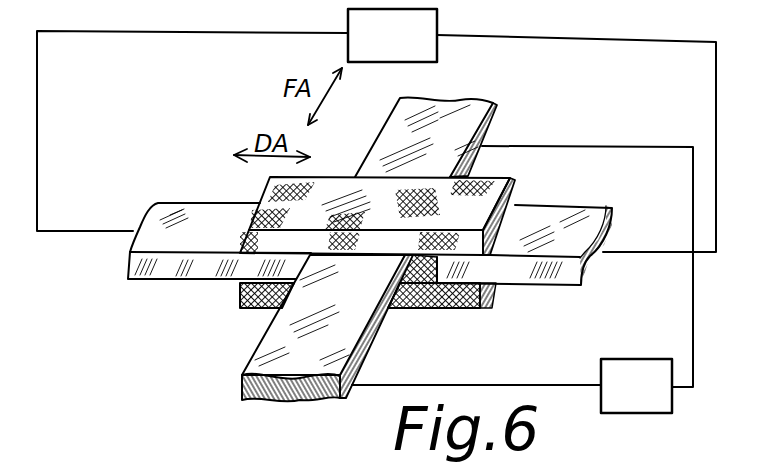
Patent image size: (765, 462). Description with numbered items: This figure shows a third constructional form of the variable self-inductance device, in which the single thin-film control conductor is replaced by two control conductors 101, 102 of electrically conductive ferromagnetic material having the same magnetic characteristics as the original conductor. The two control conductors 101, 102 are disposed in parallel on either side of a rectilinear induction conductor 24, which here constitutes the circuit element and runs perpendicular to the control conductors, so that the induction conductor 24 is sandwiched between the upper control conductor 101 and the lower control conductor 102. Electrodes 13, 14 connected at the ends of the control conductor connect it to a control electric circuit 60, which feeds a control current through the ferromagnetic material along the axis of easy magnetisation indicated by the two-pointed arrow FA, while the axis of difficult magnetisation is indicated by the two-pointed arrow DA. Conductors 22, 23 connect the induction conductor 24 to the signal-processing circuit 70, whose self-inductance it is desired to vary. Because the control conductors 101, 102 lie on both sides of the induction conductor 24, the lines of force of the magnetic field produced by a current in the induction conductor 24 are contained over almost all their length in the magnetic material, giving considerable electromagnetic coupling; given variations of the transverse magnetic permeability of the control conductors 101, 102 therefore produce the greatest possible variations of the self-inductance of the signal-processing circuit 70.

The electrode 13 is at (201, 218).
The electrode 14 is at (578, 230).
The conductor 22 is at (268, 342).
The conductor 23 is at (390, 143).
The induction conductor 24 is at (398, 308).
The control electric circuit 60 is at (376, 130).
The signal-processing circuit 70 is at (522, 279).
The control conductor 101 is at (330, 192).
The control conductor 102 is at (471, 301).